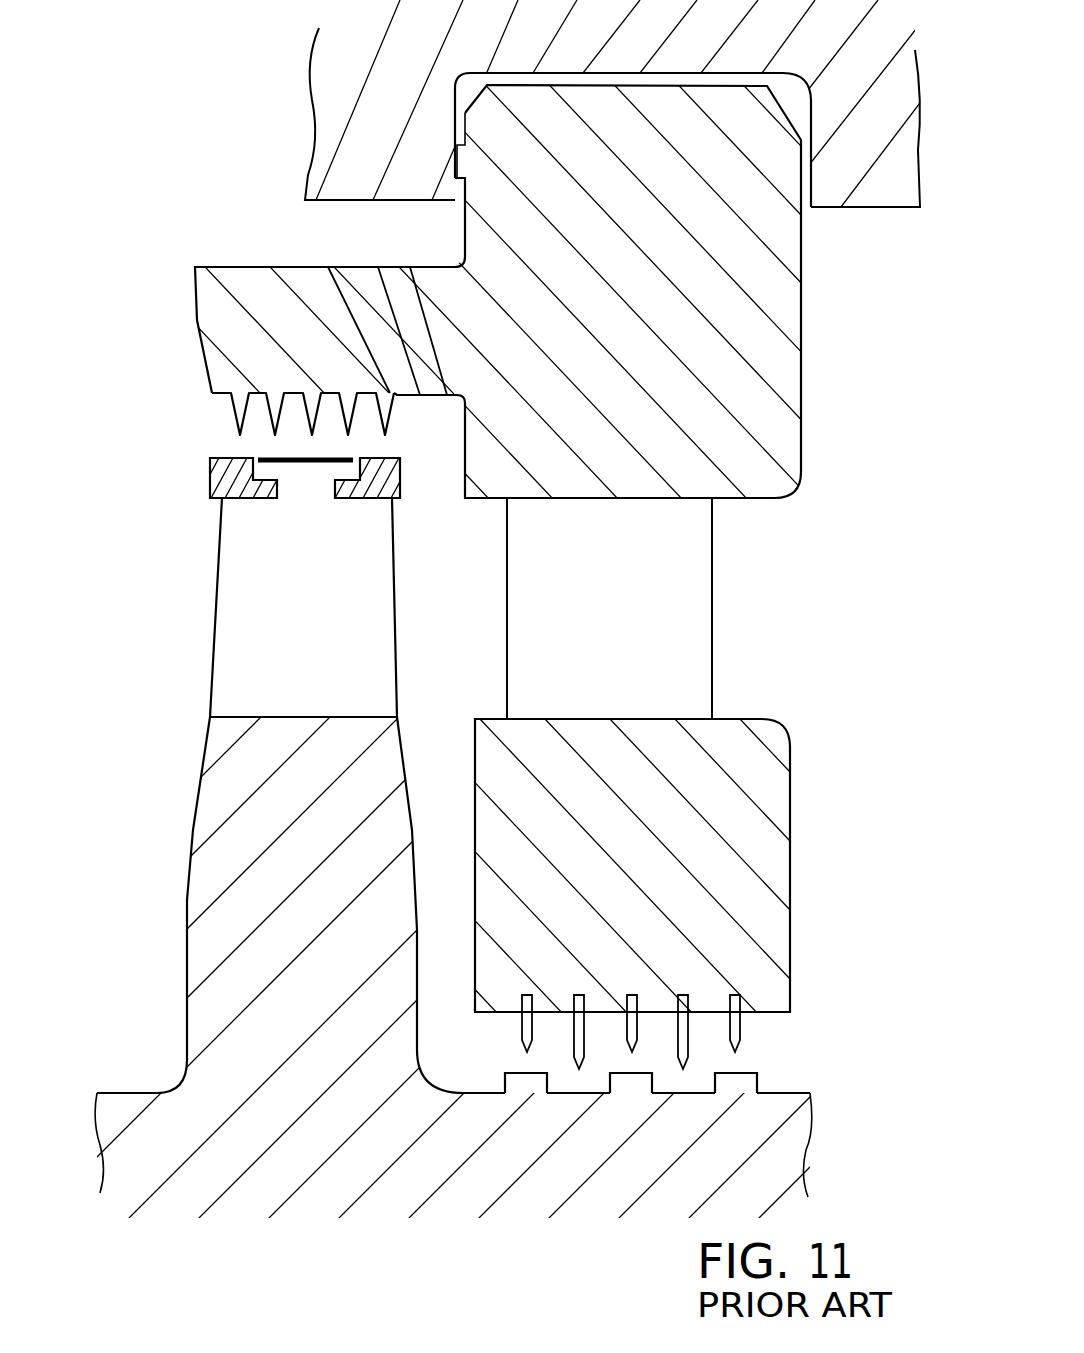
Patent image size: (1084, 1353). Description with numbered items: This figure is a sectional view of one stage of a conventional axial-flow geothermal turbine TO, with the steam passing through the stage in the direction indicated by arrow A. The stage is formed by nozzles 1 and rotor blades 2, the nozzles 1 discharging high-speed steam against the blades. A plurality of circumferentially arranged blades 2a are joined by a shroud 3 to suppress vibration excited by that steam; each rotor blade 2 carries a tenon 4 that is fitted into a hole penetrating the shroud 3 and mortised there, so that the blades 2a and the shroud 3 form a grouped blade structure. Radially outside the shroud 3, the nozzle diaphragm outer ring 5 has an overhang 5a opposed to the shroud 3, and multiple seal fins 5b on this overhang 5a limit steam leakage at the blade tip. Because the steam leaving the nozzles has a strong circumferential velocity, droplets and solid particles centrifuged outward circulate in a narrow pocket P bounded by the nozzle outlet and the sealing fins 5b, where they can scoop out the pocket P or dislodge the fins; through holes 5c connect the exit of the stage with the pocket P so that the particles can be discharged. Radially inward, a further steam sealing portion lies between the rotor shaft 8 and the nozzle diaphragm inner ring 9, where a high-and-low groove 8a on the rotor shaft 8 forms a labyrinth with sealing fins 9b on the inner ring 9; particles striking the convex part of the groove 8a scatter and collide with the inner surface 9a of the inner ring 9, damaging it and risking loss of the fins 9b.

The turbine TO is at (162, 285).
The nozzle 1 is at (742, 612).
The rotor blade 2 is at (193, 672).
The blade 2a is at (222, 580).
The shroud 3 is at (217, 480).
The tenon 4 is at (303, 467).
The nozzle diaphragm outer ring 5 is at (785, 355).
The overhang 5a is at (258, 283).
The seal fin 5b is at (233, 413).
The through hole 5c is at (395, 303).
The rotor shaft 8 is at (762, 1135).
The high-and-low groove 8a is at (690, 1088).
The nozzle diaphragm inner ring 9 is at (780, 868).
The inner surface 9a is at (500, 1012).
The sealing fin 9b is at (578, 1046).
The flow direction A is at (492, 616).
The pocket P is at (418, 437).